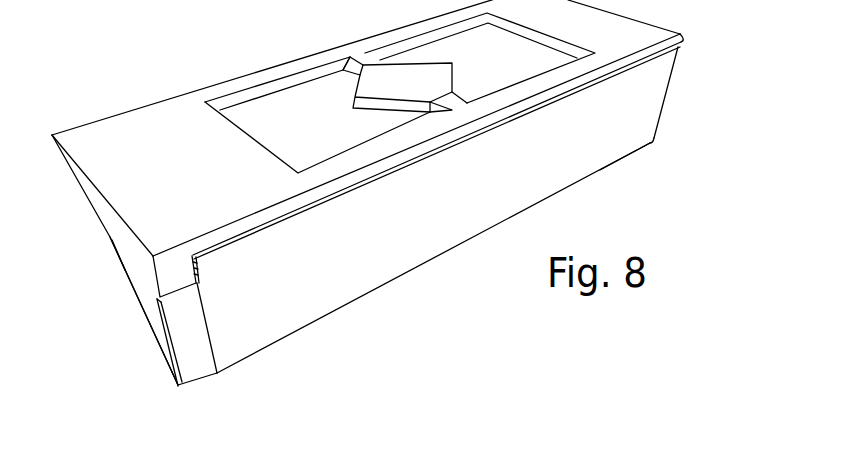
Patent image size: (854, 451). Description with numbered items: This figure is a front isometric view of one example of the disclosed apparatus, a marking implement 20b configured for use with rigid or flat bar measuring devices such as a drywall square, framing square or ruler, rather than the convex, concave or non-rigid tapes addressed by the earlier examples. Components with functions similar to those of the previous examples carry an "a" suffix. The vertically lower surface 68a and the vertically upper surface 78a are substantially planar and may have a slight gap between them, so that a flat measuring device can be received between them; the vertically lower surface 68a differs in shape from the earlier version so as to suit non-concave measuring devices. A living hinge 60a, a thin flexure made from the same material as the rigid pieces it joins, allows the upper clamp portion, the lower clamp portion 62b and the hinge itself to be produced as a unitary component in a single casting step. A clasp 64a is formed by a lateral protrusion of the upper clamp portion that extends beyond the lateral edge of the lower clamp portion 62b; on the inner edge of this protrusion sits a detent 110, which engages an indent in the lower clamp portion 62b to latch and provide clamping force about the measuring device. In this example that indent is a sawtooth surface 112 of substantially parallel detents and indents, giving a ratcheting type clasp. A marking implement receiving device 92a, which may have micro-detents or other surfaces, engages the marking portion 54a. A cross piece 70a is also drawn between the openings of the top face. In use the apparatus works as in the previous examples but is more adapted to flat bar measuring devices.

The marking implement 20b is at (95, 97).
The marking portion 54a is at (176, 377).
The living hinge 60a is at (683, 50).
The lower clamp portion 62b is at (648, 147).
The clasp 64a is at (113, 323).
The vertically lower surface 68a is at (274, 218).
The cross piece 70a is at (289, 78).
The vertically upper surface 78a is at (257, 112).
The marking implement receiving device 92a is at (172, 340).
The detent 110 is at (196, 284).
The sawtooth surface 112 is at (204, 266).